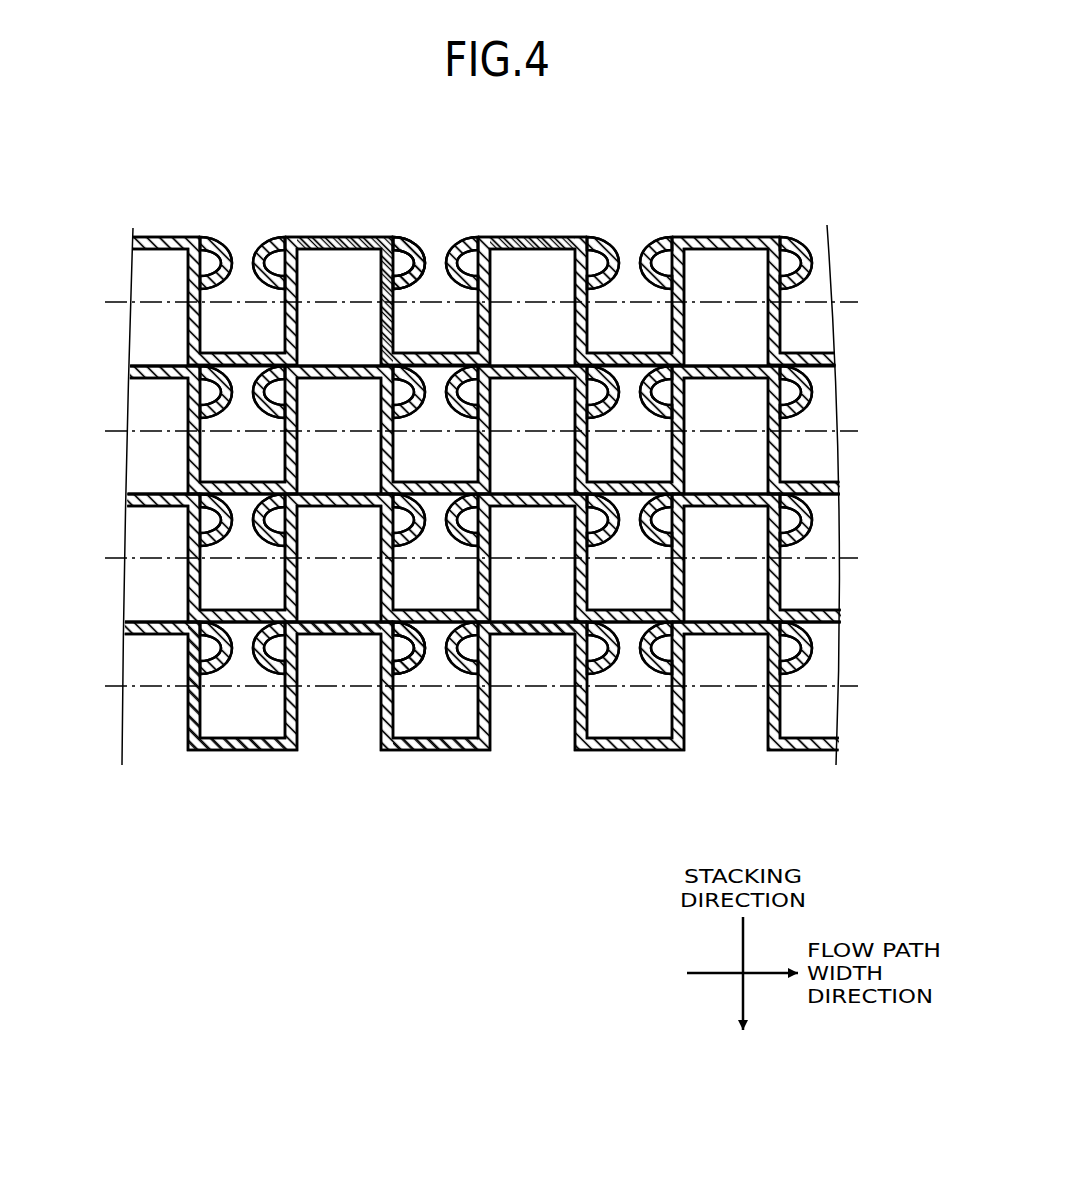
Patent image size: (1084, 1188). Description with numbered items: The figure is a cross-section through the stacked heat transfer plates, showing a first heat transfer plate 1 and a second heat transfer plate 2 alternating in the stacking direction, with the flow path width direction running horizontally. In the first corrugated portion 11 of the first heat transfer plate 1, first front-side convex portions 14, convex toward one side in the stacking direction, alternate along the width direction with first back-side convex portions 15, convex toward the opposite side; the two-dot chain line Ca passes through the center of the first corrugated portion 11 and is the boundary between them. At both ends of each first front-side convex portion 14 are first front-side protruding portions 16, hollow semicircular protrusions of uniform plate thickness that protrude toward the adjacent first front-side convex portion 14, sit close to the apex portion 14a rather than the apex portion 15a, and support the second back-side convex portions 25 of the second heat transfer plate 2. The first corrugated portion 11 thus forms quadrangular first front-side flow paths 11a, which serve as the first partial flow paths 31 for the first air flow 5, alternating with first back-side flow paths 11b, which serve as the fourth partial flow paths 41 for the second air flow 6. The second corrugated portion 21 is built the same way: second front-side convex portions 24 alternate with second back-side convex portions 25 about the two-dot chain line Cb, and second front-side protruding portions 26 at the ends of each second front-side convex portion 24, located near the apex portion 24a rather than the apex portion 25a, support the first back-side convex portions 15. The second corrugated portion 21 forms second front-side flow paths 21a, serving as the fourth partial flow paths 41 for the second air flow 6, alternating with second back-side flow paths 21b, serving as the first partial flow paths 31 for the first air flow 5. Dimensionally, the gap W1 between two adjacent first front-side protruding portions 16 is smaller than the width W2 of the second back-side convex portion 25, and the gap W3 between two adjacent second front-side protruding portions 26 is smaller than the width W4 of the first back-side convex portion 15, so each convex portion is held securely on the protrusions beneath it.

The first heat transfer plate 1 is at (840, 622).
The second heat transfer plate 2 is at (840, 750).
The first corrugated portion 11 is at (818, 612).
The second corrugated portion 21 is at (818, 740).
The first front-side flow path 11a is at (827, 594).
The first back-side flow path 11b is at (746, 594).
The second front-side flow path 21a is at (827, 722).
The second back-side flow path 21b is at (746, 722).
The first front-side convex portion 14 is at (215, 553).
The apex portion of first front-side convex portion 14a is at (310, 237).
The first back-side convex portion 15 is at (192, 608).
The apex portion of first back-side convex portion 15a is at (192, 634).
The first front-side protruding portion 16 is at (220, 533).
The second front-side convex portion 24 is at (562, 636).
The apex portion of second front-side convex portion 24a is at (506, 616).
The second back-side convex portion 25 is at (632, 747).
The apex portion of second back-side convex portion 25a is at (470, 750).
The second front-side protruding portion 26 is at (403, 670).
The first partial flow path 31 is at (570, 377).
The fourth partial flow path 41 is at (570, 377).
The first air flow 5 is at (592, 377).
The second air flow 6 is at (592, 377).
The two-dot chain line Ca is at (857, 557).
The two-dot chain line Cb is at (857, 685).
The gap size between first front-side protruding portions W1 is at (254, 236).
The width of second back-side convex portion W2 is at (188, 757).
The gap size between second front-side protruding portions W3 is at (233, 665).
The width of first back-side convex portion W4 is at (286, 234).